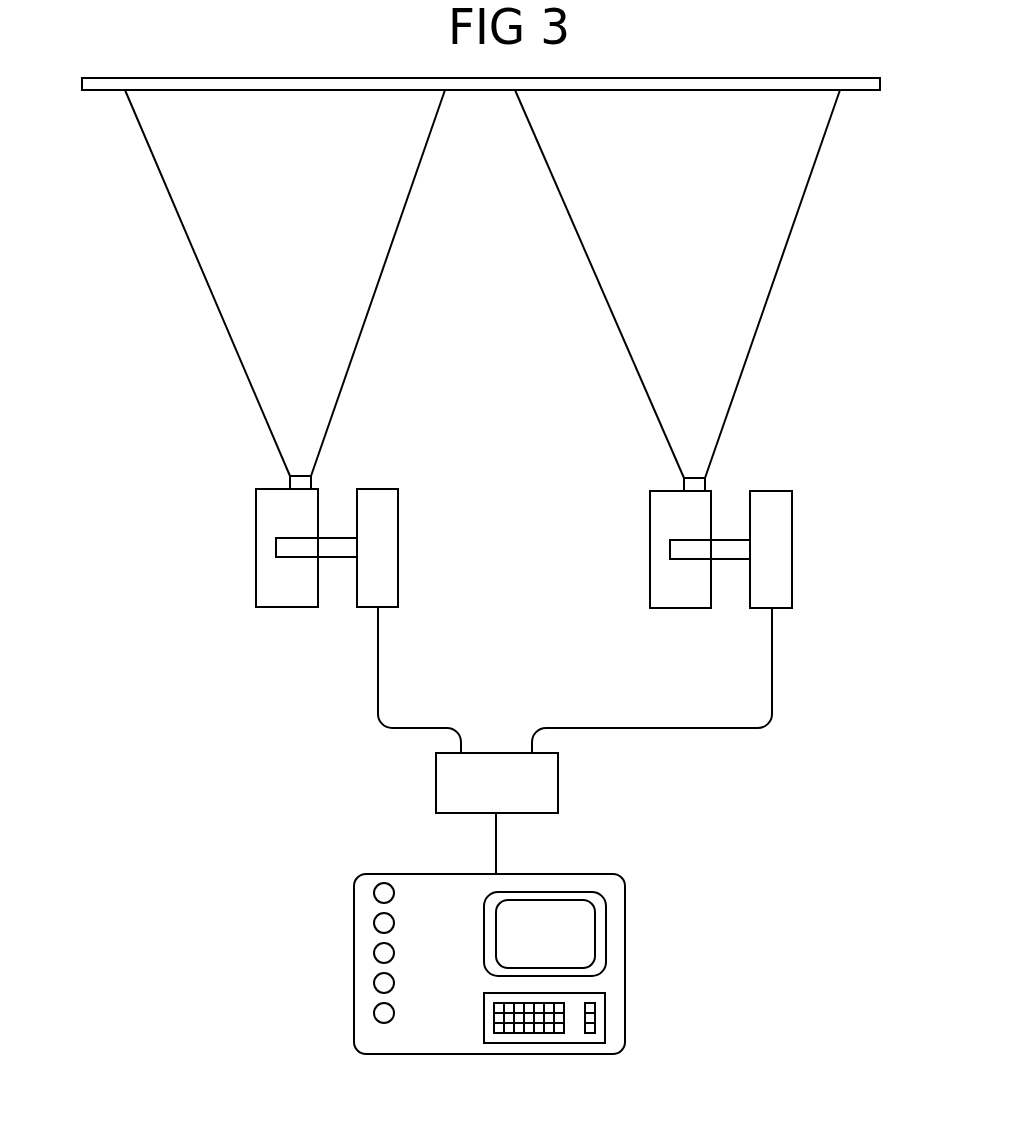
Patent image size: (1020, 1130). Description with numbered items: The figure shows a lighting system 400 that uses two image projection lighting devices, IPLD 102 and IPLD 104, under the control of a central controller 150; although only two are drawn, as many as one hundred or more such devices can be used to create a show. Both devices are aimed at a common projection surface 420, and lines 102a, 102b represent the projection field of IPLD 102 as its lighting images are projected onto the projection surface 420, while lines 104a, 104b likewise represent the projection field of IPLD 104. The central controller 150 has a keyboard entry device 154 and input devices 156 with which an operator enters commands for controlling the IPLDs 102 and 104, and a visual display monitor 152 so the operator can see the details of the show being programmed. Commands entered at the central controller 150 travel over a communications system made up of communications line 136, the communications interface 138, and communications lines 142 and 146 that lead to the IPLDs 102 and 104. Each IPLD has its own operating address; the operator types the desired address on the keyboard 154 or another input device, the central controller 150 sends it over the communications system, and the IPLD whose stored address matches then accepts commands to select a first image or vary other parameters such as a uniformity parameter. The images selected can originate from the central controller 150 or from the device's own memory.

The lighting system 400 is at (118, 289).
The projection surface 420 is at (318, 98).
The IPLD 102 is at (245, 577).
The line 102a is at (228, 319).
The line 102b is at (382, 303).
The IPLD 104 is at (800, 582).
The line 104a is at (616, 298).
The line 104b is at (772, 292).
The communications line 142 is at (364, 671).
The communications line 146 is at (597, 730).
The communications interface 138 is at (436, 793).
The communications line 136 is at (502, 852).
The central controller 150 is at (353, 963).
The visual display monitor 152 is at (610, 930).
The keyboard entry device 154 is at (610, 1018).
The input devices 156 is at (408, 943).